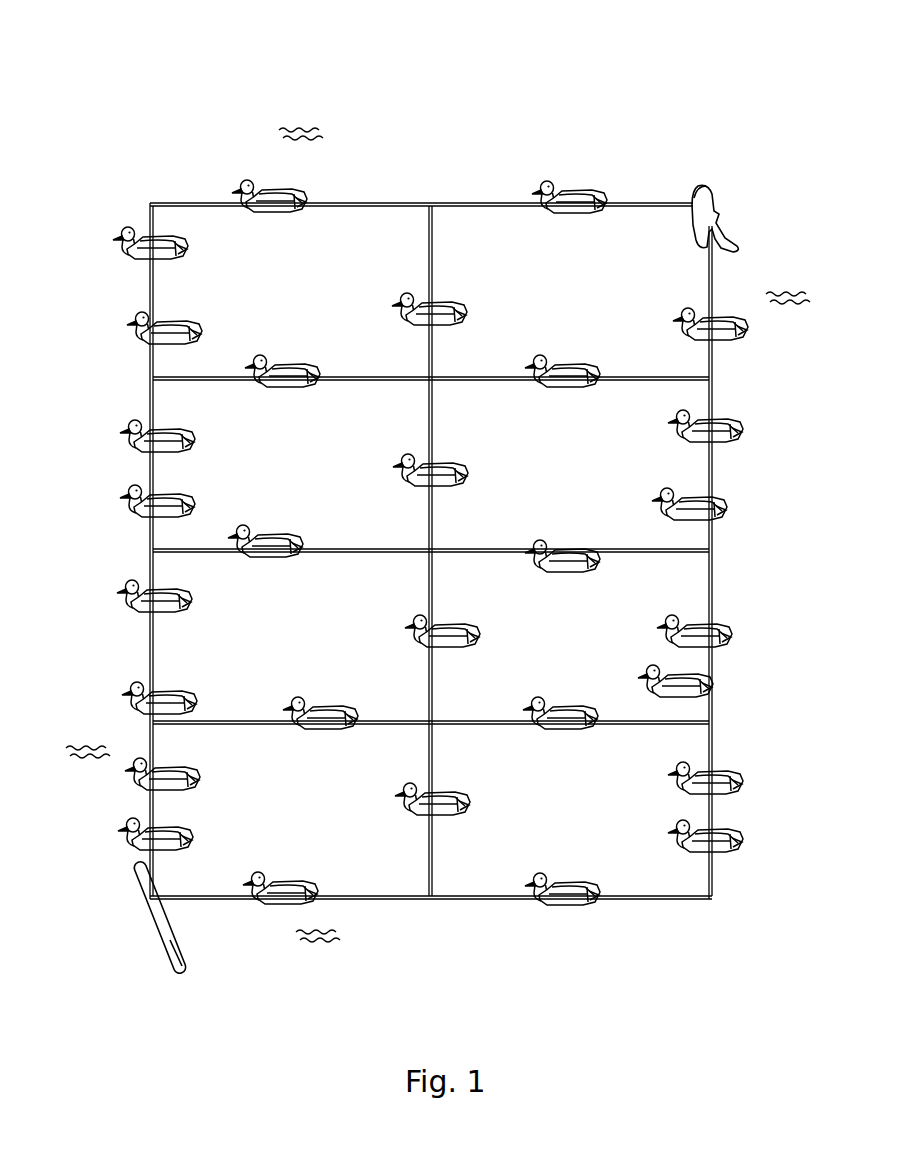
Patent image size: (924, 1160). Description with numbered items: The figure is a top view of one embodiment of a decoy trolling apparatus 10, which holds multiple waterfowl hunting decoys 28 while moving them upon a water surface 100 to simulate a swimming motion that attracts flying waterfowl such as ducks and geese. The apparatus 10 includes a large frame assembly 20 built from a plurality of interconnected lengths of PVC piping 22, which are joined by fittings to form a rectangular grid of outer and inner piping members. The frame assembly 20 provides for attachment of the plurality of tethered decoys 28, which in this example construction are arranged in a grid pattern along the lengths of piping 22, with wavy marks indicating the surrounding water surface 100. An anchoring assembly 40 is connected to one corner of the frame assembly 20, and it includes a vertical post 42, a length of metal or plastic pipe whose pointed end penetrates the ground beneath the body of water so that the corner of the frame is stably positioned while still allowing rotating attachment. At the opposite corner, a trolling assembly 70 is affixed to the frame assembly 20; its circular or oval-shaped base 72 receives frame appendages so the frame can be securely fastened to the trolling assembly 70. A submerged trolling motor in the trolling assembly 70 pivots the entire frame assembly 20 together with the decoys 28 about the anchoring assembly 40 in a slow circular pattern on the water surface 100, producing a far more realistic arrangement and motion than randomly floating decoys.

The decoy trolling apparatus 10 is at (129, 122).
The frame assembly 20 is at (663, 904).
The lengths of piping 22 is at (453, 203).
The decoys 28 is at (128, 588).
The anchoring assembly 40 is at (145, 906).
The vertical post 42 is at (168, 941).
The trolling assembly 70 is at (712, 191).
The base 72 is at (695, 188).
The water surface 100 is at (322, 135).